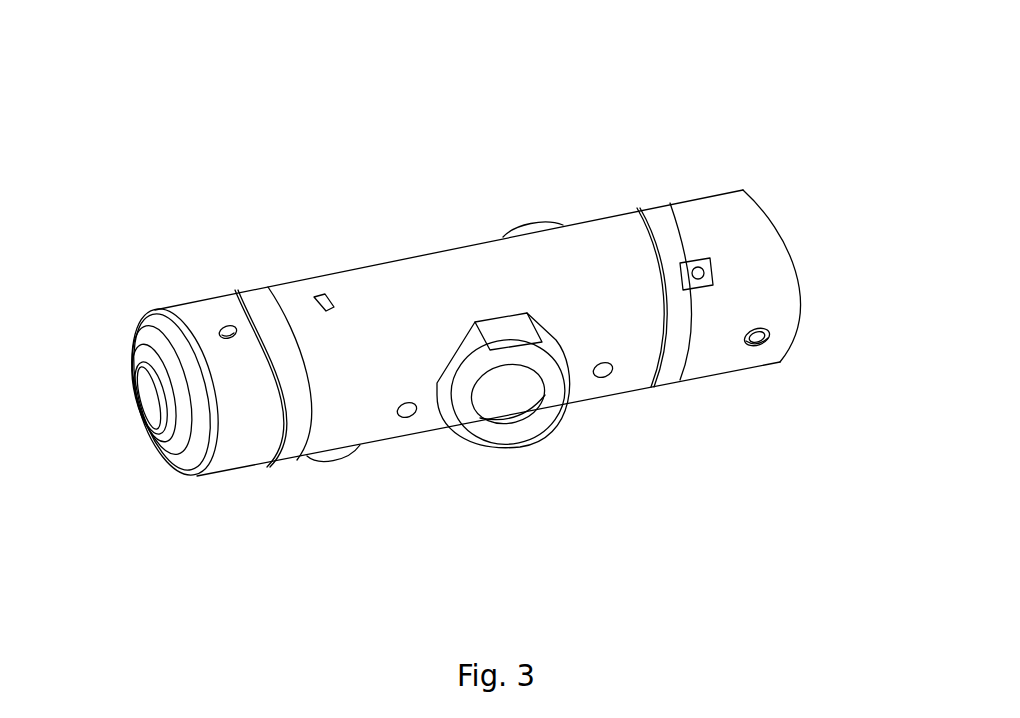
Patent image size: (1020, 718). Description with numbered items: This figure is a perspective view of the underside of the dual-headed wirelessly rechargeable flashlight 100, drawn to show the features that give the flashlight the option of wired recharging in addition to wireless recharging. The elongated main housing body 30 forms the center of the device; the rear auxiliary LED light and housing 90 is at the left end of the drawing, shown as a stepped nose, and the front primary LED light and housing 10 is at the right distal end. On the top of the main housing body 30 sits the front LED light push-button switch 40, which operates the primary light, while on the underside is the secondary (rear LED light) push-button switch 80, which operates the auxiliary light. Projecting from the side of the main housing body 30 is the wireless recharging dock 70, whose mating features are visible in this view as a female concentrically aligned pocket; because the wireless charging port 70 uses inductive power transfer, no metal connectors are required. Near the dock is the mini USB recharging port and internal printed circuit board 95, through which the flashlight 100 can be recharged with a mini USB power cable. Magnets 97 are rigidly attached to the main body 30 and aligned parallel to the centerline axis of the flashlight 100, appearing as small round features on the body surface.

The dual-headed wirelessly rechargeable flashlight 100 is at (710, 105).
The front primary LED light and housing 10 is at (754, 304).
The main housing body 30 is at (447, 278).
The front LED light push-button switch 40 is at (540, 207).
The wireless recharging dock 70 is at (500, 394).
The secondary (rear LED light) push-button switch 80 is at (337, 481).
The rear auxiliary LED light and housing 90 is at (152, 395).
The mini USB recharging port and internal printed circuit board (PCB) 95 is at (317, 284).
The magnets 97 is at (404, 435).